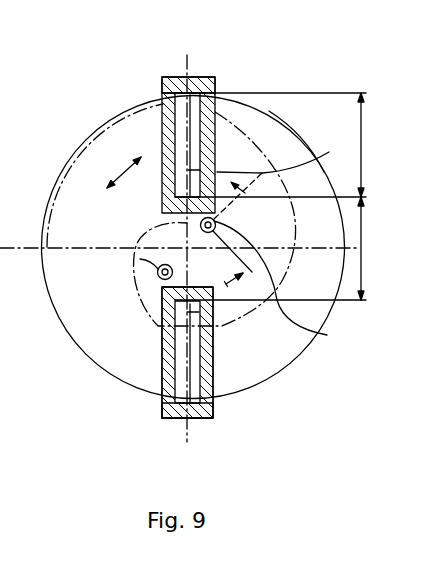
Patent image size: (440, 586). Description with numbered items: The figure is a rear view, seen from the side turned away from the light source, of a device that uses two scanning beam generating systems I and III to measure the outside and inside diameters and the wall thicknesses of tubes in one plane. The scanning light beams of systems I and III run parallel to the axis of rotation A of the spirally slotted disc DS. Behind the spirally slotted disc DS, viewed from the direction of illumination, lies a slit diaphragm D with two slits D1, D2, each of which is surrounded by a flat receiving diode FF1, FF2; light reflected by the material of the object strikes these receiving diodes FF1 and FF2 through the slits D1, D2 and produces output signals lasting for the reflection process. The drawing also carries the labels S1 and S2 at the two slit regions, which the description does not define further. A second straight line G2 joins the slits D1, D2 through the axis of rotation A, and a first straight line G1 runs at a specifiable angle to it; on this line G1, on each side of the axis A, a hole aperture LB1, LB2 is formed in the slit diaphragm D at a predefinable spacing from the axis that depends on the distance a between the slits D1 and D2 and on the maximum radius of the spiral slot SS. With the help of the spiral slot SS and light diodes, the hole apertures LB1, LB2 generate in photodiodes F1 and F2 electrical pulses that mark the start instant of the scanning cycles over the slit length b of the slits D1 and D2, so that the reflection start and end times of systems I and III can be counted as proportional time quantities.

The slit diaphragm D is at (254, 104).
The spirally slotted disc DS is at (254, 104).
The first straight line G1 is at (300, 138).
The second straight line G2 is at (187, 60).
The axis of rotation A is at (189, 250).
The first slit D1 is at (170, 131).
The second slit D2 is at (194, 410).
The first slot S1 is at (193, 108).
The second slot S2 is at (188, 382).
The first flat receiving diode FF1 is at (212, 77).
The second flat receiving diode FF2 is at (172, 408).
The first hole aperture LB1 is at (200, 225).
The second hole aperture LB2 is at (160, 278).
The first photodiode F1 is at (280, 284).
The second photodiode F2 is at (140, 259).
The spiral slot SS is at (248, 316).
The distance between slits a is at (270, 248).
The slit length b is at (264, 145).
The first scanning beam generating system I is at (176, 172).
The second scanning beam generating system III is at (194, 352).